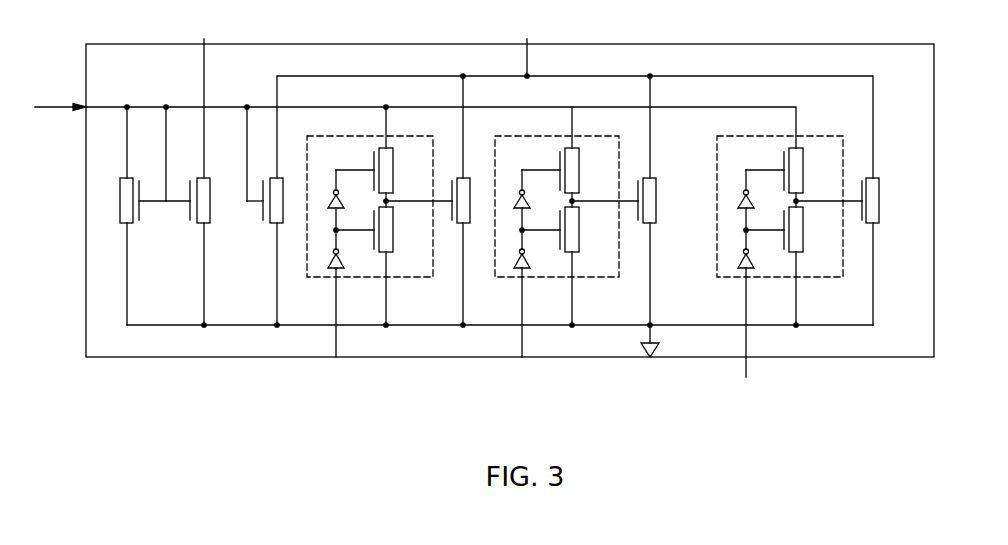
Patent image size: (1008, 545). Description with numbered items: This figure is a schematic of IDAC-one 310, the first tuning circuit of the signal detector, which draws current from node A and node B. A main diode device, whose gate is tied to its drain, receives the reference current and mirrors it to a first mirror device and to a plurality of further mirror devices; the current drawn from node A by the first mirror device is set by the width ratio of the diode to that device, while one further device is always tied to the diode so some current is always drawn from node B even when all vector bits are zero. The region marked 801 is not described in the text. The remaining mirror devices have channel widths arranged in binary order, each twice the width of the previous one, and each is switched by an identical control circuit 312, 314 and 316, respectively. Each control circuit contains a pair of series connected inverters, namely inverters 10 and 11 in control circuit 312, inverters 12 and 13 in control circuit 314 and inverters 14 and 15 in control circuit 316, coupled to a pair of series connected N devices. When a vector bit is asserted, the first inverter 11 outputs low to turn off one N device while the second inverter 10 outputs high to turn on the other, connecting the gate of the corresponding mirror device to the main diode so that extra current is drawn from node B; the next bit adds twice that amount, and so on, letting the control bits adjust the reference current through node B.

The inverter 10 is at (328, 189).
The inverter 11 is at (328, 258).
The inverter 12 is at (514, 189).
The inverter 13 is at (514, 258).
The inverter 14 is at (738, 189).
The inverter 15 is at (738, 258).
The control circuit 312 is at (447, 140).
The control circuit 314 is at (633, 140).
The control circuit 316 is at (857, 140).
The bias current mirror circuit 801 is at (140, 348).
The IDAC-1 310 is at (897, 410).